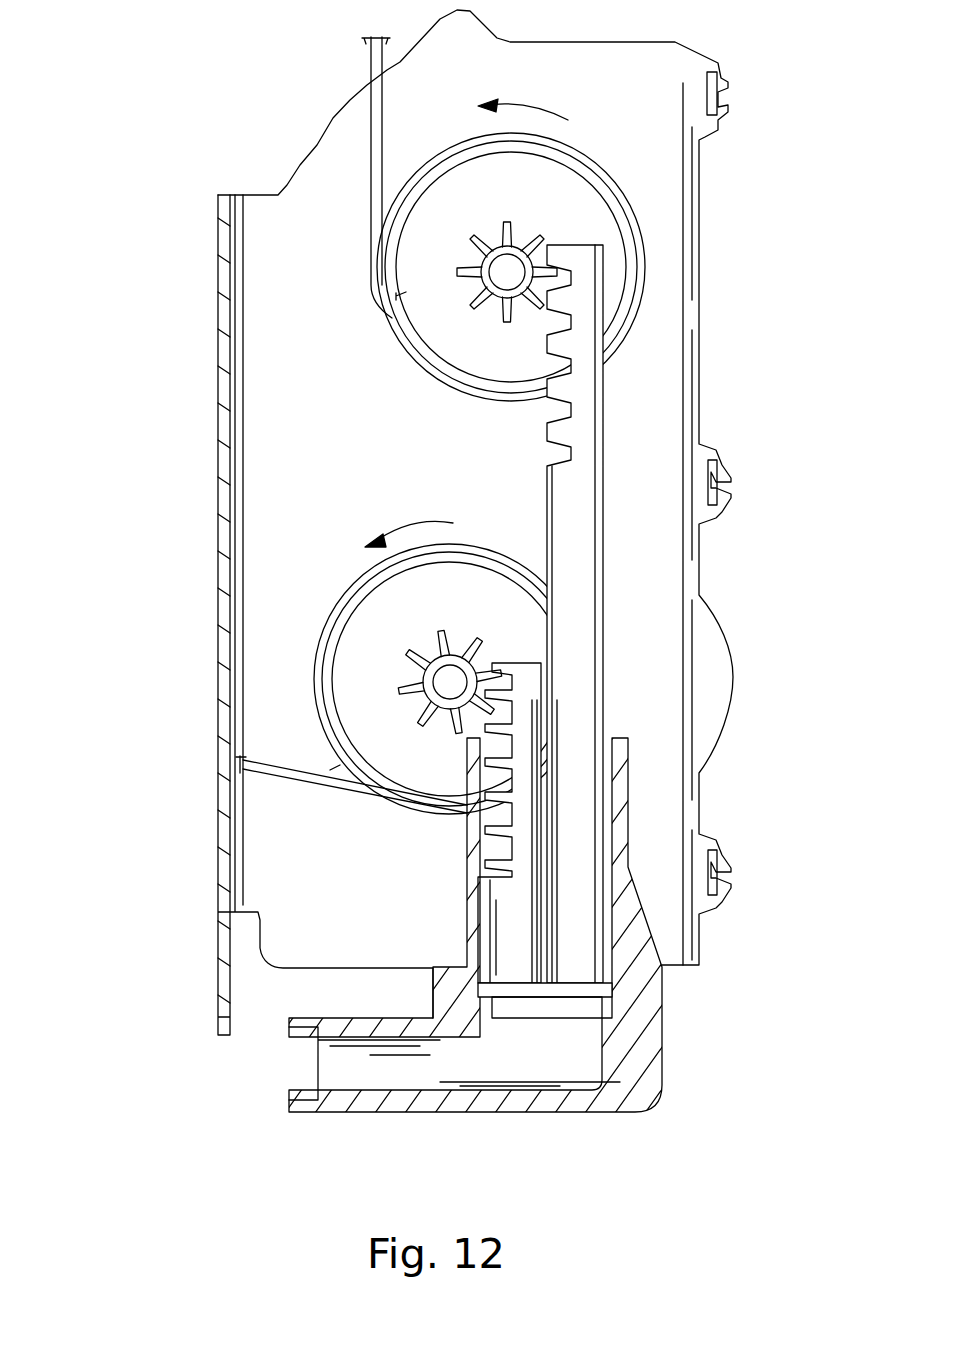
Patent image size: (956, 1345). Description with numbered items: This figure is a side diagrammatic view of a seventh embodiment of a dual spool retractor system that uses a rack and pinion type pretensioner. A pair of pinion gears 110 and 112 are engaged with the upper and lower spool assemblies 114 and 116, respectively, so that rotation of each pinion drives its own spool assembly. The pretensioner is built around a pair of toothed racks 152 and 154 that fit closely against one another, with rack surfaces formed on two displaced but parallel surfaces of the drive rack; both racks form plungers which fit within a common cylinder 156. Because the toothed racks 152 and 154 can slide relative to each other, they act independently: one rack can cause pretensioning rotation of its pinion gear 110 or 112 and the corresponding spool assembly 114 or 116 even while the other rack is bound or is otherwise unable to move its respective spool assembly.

The pinion gear 110 is at (518, 245).
The upper spool assembly 114 is at (633, 230).
The toothed rack 152 is at (607, 383).
The lower spool assembly 116 is at (380, 643).
The pinion gear 112 is at (425, 684).
The toothed rack 154 is at (487, 905).
The common cylinder 156 is at (603, 885).